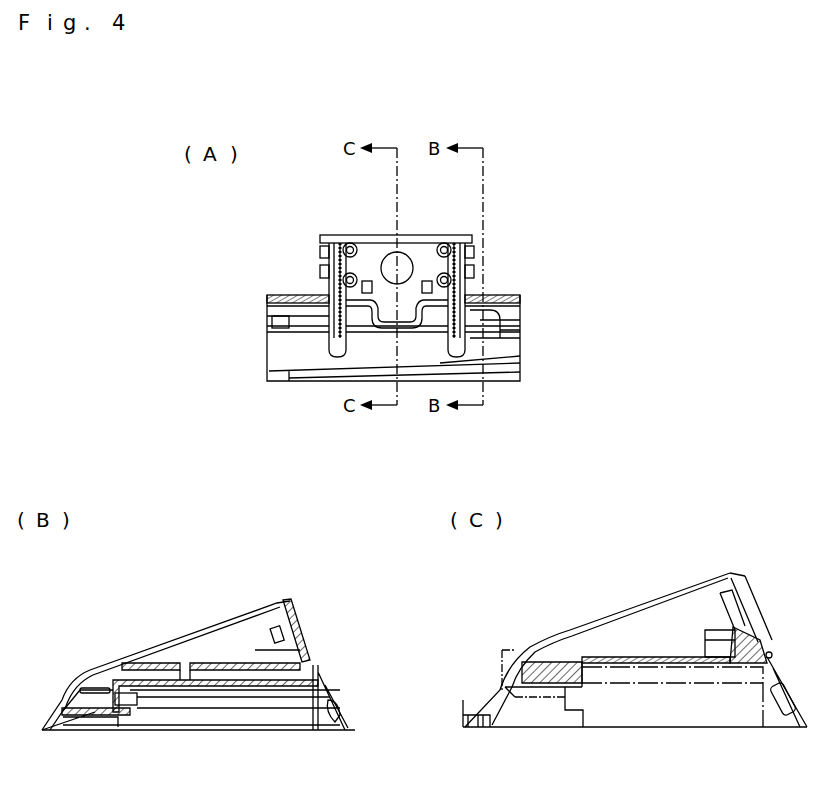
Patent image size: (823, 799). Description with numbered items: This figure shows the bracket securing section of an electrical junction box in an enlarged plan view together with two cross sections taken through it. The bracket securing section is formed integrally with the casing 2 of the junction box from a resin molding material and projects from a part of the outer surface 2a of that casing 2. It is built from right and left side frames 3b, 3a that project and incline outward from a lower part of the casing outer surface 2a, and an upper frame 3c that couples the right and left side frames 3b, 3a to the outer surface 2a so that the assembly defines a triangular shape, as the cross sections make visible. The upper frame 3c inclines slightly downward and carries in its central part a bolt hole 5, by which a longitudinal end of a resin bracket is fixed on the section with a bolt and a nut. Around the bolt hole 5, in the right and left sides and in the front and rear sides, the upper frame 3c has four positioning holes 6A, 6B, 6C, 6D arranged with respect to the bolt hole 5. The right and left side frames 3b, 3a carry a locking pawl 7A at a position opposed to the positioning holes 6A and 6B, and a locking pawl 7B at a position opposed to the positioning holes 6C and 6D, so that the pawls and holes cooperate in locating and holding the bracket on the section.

The casing 2 is at (118, 728).
The outer surface 2a is at (490, 300).
The left side frame 3a is at (320, 252).
The right side frame 3b is at (472, 250).
The upper frame 3c is at (368, 240).
The bolt hole 5 is at (405, 262).
The positioning hole 6A is at (444, 243).
The positioning hole 6B is at (451, 281).
The positioning hole 6C is at (348, 244).
The positioning hole 6D is at (272, 303).
The locking pawl 7A is at (474, 268).
The locking pawl 7B is at (320, 270).